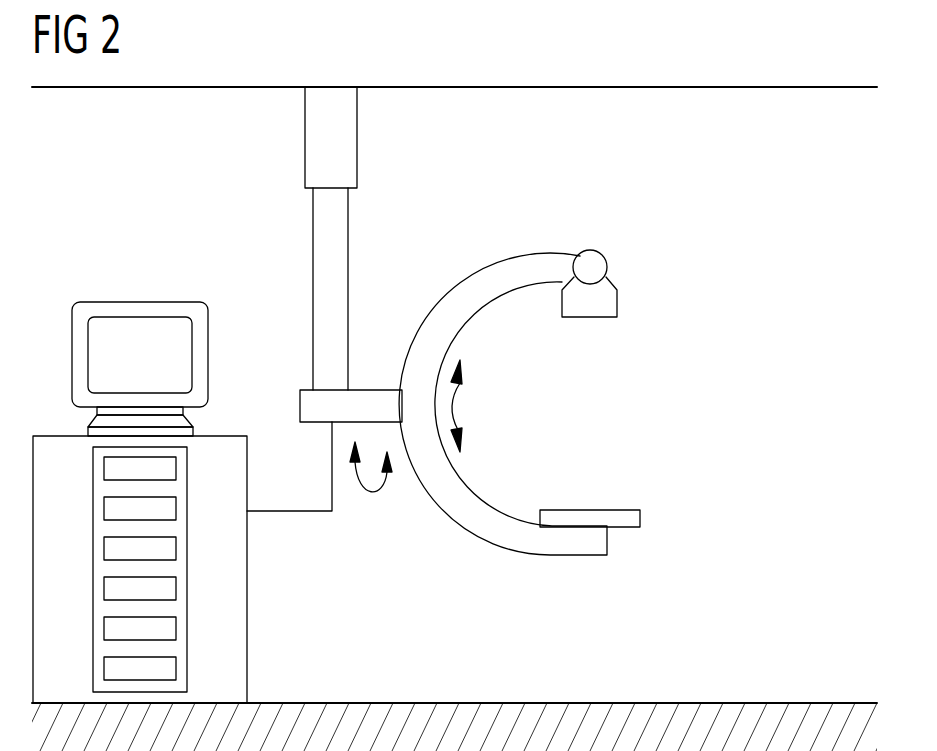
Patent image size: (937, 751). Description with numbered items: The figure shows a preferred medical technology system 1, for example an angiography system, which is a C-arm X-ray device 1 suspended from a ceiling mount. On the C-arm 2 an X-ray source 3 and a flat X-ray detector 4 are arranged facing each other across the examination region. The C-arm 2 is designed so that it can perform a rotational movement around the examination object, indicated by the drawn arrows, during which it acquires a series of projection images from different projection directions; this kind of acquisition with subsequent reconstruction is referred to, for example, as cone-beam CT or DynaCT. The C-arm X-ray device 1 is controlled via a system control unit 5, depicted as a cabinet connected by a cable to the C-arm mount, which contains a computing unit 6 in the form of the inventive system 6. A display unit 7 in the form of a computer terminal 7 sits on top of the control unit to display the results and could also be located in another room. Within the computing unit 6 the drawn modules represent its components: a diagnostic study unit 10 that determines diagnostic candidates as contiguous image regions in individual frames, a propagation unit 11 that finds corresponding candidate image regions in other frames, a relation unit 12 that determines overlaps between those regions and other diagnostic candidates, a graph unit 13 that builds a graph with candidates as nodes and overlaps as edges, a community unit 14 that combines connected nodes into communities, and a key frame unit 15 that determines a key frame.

The medical technology system 1 is at (128, 186).
The C-arm 2 is at (490, 265).
The X-ray source 3 is at (588, 307).
The flat X-ray detector 4 is at (590, 512).
The system control unit 5 is at (247, 570).
The computing unit 6 is at (187, 570).
The display unit 7 is at (140, 302).
The diagnostic study unit 10 is at (104, 670).
The propagation unit 11 is at (104, 630).
The relation unit 12 is at (104, 590).
The graph unit 13 is at (104, 550).
The community unit 14 is at (104, 510).
The key frame unit 15 is at (104, 470).